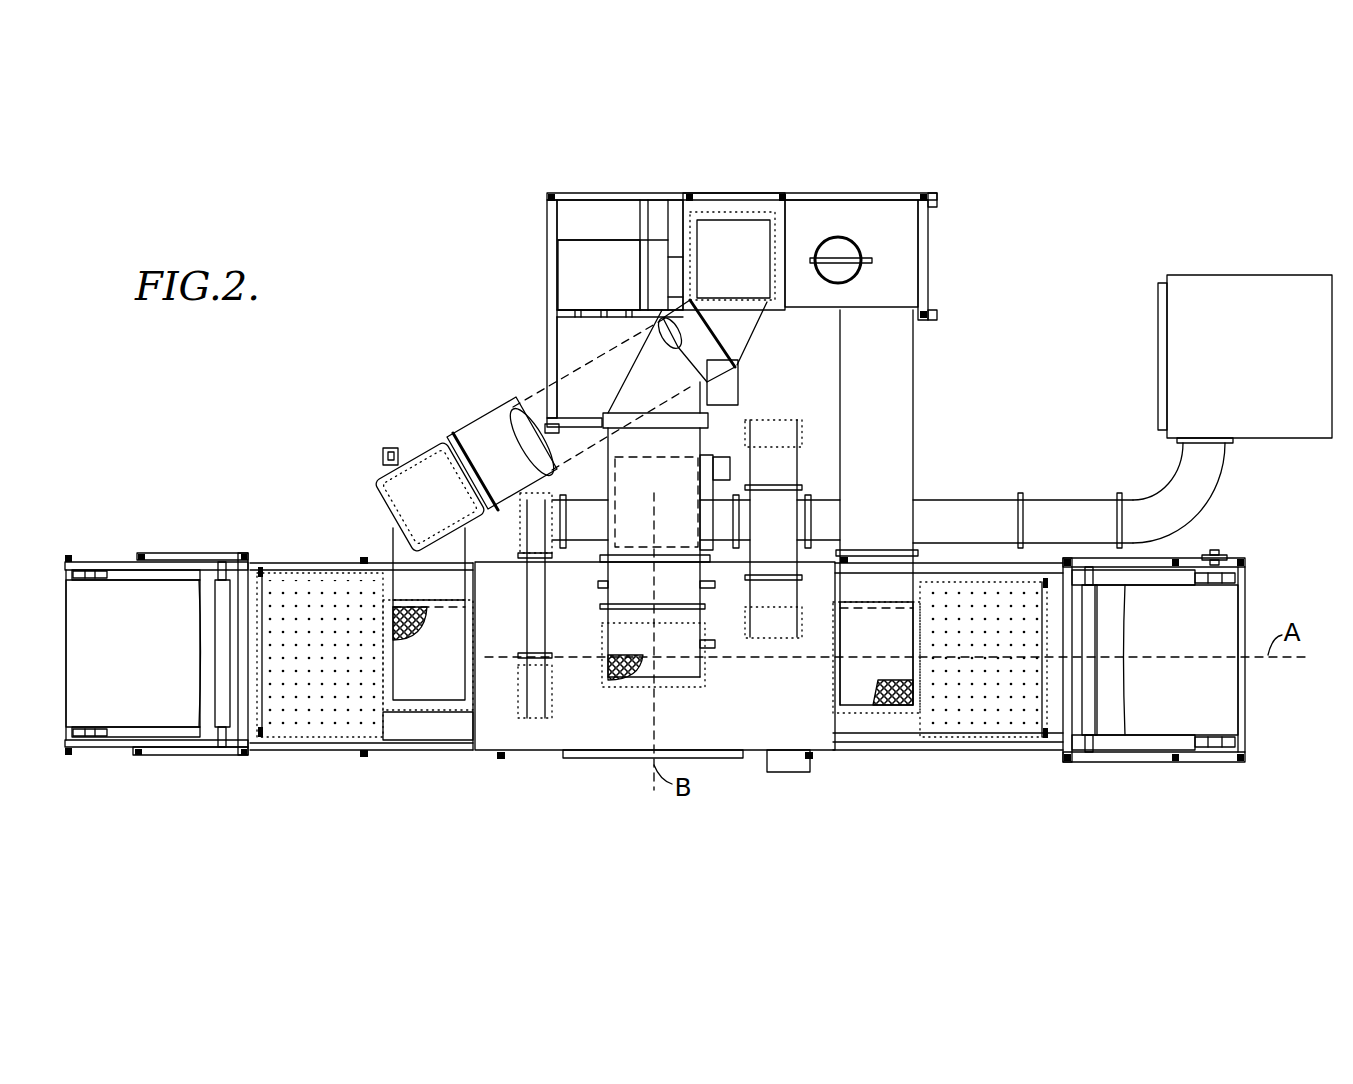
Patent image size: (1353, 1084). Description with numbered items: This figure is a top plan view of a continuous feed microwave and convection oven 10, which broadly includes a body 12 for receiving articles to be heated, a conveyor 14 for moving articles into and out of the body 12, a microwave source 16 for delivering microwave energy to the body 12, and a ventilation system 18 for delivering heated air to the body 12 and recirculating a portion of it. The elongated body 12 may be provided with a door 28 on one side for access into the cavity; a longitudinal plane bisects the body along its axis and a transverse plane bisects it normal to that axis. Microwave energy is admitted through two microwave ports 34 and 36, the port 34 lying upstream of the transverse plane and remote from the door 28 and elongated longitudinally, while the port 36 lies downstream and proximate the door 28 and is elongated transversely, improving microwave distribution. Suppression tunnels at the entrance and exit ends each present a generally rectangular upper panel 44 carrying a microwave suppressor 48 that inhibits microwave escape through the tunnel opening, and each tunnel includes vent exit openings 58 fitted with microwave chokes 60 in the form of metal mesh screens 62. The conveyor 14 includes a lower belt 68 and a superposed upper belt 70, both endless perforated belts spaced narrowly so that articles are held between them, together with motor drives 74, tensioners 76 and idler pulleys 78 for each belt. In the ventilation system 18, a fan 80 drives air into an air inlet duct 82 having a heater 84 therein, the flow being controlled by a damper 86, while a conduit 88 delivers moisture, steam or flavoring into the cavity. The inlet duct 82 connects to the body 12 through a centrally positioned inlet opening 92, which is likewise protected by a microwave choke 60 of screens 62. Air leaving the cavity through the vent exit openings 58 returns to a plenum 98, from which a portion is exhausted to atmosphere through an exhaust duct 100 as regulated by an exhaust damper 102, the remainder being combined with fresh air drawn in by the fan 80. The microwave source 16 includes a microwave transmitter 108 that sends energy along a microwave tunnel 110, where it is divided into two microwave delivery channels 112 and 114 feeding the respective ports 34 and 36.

The continuous feed microwave and convection oven 10 is at (995, 340).
The oven body 12 is at (540, 753).
The conveyor 14 is at (1124, 740).
The microwave source 16 is at (1212, 272).
The ventilation system 18 is at (386, 526).
The door 28 is at (735, 760).
The microwave port 34 is at (785, 640).
The microwave port 36 is at (518, 690).
The upper panel 44 is at (383, 745).
The microwave suppressor 48 is at (322, 717).
The vent exit openings 58 is at (398, 607).
The microwave choke 60 is at (405, 608).
The metal mesh screens 62 is at (418, 635).
The lower belt 68 is at (128, 712).
The upper belt 70 is at (198, 658).
The motor drives 74 is at (1222, 556).
The tensioners 76 is at (108, 577).
The idler pulleys 78 is at (218, 598).
The fan 80 is at (660, 240).
The air inlet duct 82 is at (604, 440).
The heater 84 is at (616, 488).
The damper 86 is at (598, 585).
The conduit 88 is at (716, 645).
The inlet opening 92 is at (613, 655).
The plenum 98 is at (725, 193).
The exhaust duct 100 is at (855, 277).
The exhaust damper 102 is at (862, 256).
The microwave transmitter 108 is at (1160, 437).
The microwave tunnel 110 is at (942, 497).
The microwave delivery channel 112 is at (772, 432).
The microwave delivery channel 114 is at (525, 610).